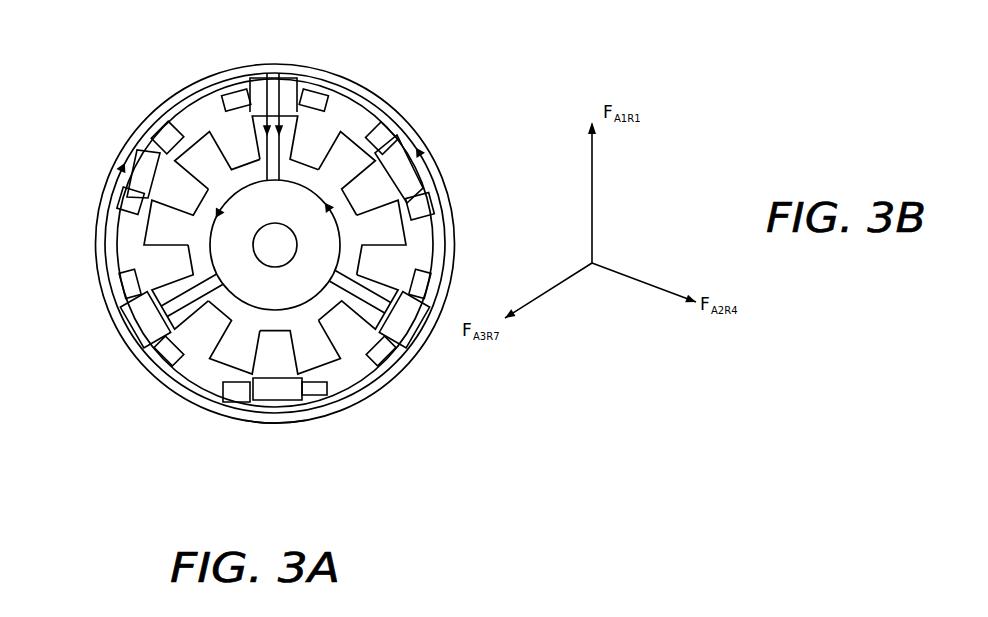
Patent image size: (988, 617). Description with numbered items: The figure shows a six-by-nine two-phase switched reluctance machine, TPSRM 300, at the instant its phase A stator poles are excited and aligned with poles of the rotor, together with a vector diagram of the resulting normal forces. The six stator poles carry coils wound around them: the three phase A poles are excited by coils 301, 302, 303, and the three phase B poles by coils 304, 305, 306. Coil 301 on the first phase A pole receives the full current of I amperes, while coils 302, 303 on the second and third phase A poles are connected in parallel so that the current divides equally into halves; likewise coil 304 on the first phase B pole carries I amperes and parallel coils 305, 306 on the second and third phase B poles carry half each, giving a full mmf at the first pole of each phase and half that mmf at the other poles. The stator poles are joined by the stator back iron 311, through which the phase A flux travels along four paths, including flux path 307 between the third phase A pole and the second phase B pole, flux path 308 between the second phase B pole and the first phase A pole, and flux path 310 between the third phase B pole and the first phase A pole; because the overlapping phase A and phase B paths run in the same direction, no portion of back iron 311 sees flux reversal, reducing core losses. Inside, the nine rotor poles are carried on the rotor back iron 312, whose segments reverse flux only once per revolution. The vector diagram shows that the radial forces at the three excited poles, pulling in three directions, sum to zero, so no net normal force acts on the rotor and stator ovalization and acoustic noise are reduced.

The TPSRM 300 is at (457, 100).
The coil 301 is at (235, 98).
The coil 302 is at (386, 350).
The coil 303 is at (160, 356).
The coil 304 is at (312, 392).
The coil 305 is at (123, 205).
The coil 306 is at (437, 196).
The flux path 307 is at (97, 250).
The flux path 308 is at (168, 107).
The flux path 310 is at (358, 87).
The stator back iron 311 is at (232, 422).
The rotor back iron 312 is at (305, 302).